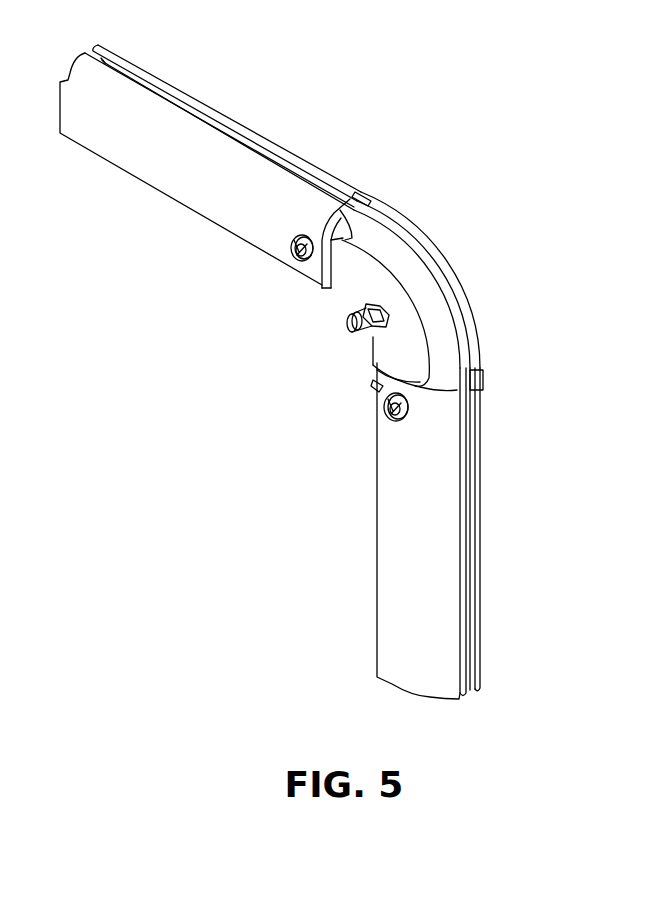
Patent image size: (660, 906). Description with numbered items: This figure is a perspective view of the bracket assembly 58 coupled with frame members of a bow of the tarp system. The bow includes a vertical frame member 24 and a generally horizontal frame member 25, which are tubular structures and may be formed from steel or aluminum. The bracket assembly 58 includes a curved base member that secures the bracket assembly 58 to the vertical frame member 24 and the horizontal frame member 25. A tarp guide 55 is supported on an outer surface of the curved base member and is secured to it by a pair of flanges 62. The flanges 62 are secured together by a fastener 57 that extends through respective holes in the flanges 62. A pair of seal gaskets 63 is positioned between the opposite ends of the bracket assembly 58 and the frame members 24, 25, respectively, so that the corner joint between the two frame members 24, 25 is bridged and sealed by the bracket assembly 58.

The vertical frame member 24 is at (400, 512).
The horizontal frame member 25 is at (213, 197).
The tarp guide 55 is at (398, 267).
The fastener 57 is at (296, 255).
The bracket assembly 58 is at (498, 253).
The flange 62 is at (352, 275).
The seal gasket 63 is at (365, 197).